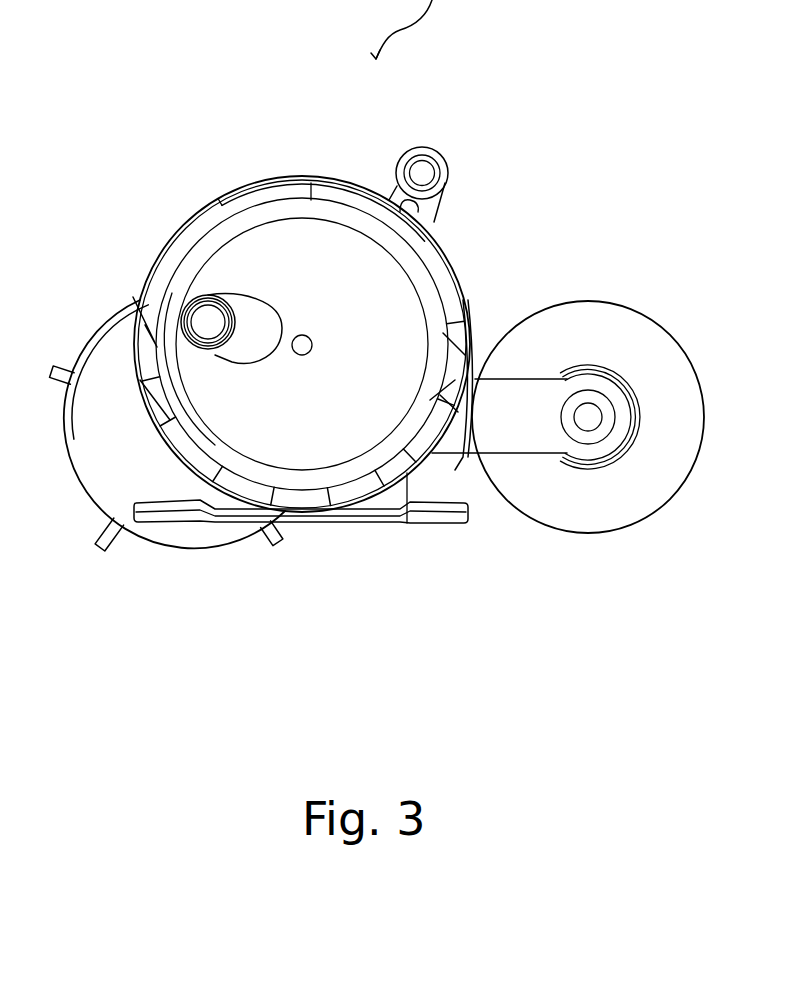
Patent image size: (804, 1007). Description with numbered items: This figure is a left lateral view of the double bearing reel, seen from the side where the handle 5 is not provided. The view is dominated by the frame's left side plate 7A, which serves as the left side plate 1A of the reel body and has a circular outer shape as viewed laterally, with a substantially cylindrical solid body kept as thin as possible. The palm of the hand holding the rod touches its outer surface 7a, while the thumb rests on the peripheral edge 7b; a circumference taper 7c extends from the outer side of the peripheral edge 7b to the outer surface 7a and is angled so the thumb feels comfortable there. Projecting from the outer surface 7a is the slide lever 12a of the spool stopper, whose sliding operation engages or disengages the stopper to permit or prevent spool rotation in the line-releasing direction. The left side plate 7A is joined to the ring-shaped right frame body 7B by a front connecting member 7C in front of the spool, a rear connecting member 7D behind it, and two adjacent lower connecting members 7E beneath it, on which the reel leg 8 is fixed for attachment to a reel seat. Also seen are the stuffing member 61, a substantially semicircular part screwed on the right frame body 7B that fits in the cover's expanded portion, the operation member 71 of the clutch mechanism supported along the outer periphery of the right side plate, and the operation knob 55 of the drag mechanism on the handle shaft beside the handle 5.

The handle 5 is at (457, 453).
The left side plate 7A is at (327, 344).
The left side plate 1A is at (392, 288).
The right frame body 7B is at (386, 172).
The peripheral edge 7b is at (311, 183).
The front connecting member 7C is at (137, 372).
The circumference taper 7c is at (208, 437).
The rear connecting member 7D is at (470, 350).
The lower connecting members 7E is at (243, 495).
The outer surface 7a is at (407, 523).
The reel leg 8 is at (382, 522).
The slide lever 12a is at (203, 315).
The operation knob 55 is at (104, 553).
The stuffing member 61 is at (110, 498).
The operation member 71 is at (440, 160).